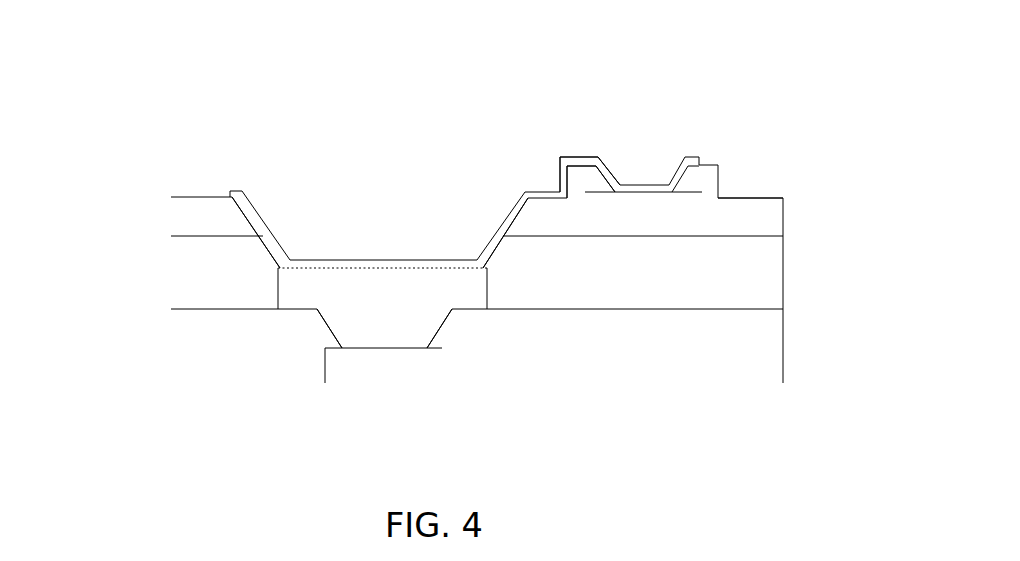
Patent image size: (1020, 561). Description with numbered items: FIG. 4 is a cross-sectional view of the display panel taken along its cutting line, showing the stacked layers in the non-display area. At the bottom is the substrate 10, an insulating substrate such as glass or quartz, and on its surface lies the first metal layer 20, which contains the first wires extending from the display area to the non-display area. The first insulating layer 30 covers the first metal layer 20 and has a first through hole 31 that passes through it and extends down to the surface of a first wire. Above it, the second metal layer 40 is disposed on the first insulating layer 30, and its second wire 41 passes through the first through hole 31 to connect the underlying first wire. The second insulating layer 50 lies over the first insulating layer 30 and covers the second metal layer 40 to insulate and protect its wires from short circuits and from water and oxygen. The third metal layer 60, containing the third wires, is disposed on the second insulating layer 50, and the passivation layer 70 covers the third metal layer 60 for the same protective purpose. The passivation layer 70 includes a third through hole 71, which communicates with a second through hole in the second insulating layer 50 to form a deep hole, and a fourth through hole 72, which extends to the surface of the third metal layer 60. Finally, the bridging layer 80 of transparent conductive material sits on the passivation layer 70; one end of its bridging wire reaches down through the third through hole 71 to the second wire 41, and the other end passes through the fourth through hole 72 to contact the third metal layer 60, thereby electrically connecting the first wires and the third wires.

The substrate 10 is at (783, 412).
The first metal layer 20 is at (402, 370).
The first insulating layer 30 is at (783, 345).
The first through hole 31 is at (330, 330).
The second metal layer 40 is at (264, 269).
The second wire 41 is at (288, 288).
The second insulating layer 50 is at (783, 272).
The third metal layer 60 is at (687, 204).
The passivation layer 70 is at (785, 215).
The third through hole 71 is at (405, 228).
The fourth through hole 72 is at (628, 168).
The bridging layer 80 is at (257, 214).